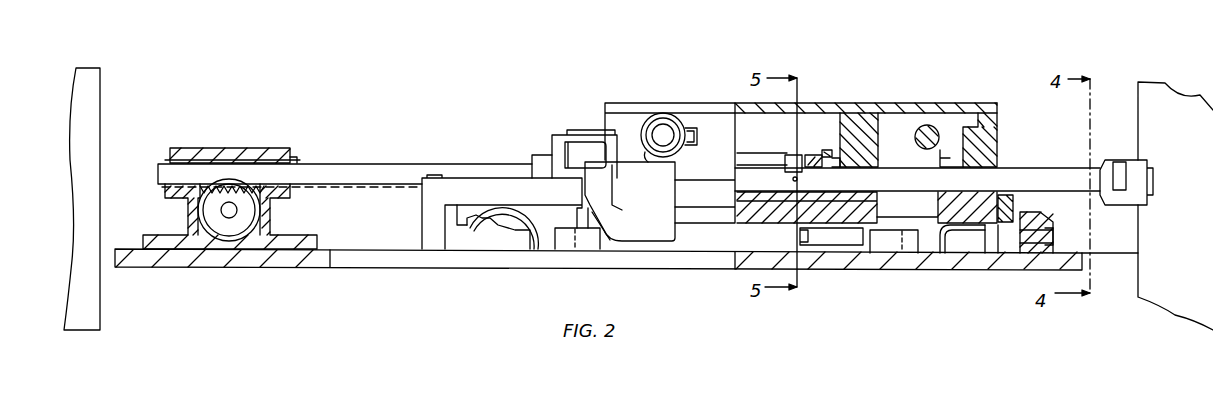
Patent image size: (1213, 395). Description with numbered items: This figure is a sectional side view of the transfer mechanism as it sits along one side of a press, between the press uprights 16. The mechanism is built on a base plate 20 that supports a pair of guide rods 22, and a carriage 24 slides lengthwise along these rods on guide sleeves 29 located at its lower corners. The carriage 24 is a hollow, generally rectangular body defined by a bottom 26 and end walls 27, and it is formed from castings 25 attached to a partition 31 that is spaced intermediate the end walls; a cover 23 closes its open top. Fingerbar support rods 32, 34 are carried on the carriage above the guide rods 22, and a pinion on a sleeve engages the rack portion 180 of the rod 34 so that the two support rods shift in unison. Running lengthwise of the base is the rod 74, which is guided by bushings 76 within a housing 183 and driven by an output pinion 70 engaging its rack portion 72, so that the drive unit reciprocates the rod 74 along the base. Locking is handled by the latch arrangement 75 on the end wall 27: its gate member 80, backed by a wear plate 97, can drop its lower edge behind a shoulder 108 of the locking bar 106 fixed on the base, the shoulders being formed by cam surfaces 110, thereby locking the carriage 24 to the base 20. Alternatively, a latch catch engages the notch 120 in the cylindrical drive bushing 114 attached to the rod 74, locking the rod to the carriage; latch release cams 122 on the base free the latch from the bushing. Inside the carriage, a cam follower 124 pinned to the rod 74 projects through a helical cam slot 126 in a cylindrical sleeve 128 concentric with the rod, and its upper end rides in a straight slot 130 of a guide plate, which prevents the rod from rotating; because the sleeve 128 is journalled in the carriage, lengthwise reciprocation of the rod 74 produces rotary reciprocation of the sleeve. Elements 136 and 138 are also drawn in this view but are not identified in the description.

The upright 16 is at (93, 97).
The base plate 20 is at (347, 261).
The guide rod 22 is at (463, 186).
The cover 23 is at (683, 105).
The carriage 24 is at (952, 85).
The casting 25 is at (810, 222).
The bottom 26 is at (785, 214).
The end wall 27 is at (993, 118).
The guide sleeve 29 is at (643, 232).
The partition 31 is at (853, 118).
The fingerbar support rod 32 is at (658, 133).
The fingerbar support rod 34 is at (917, 137).
The output pinion 70 is at (243, 214).
The rack portion 72 is at (310, 190).
The rod 74 is at (333, 168).
The latch arrangement 75 is at (1057, 134).
The bushing 76 is at (165, 160).
The gate member 80 is at (1038, 151).
The wear plate 97 is at (1007, 145).
The locking bar 106 is at (1040, 226).
The shoulder 108 is at (987, 224).
The cam surface 110 is at (950, 248).
The drive bushing 114 is at (1122, 194).
The notch 120 is at (1117, 165).
The latch release cam 122 is at (892, 248).
The cam follower 124 is at (803, 167).
The cam slot 126 is at (763, 162).
The cylindrical sleeve 128 is at (762, 199).
The straight slot 130 is at (746, 155).
The spring 136 is at (857, 143).
The retainer 138 is at (824, 151).
The rack portion 180 is at (931, 145).
The housing 183 is at (250, 150).